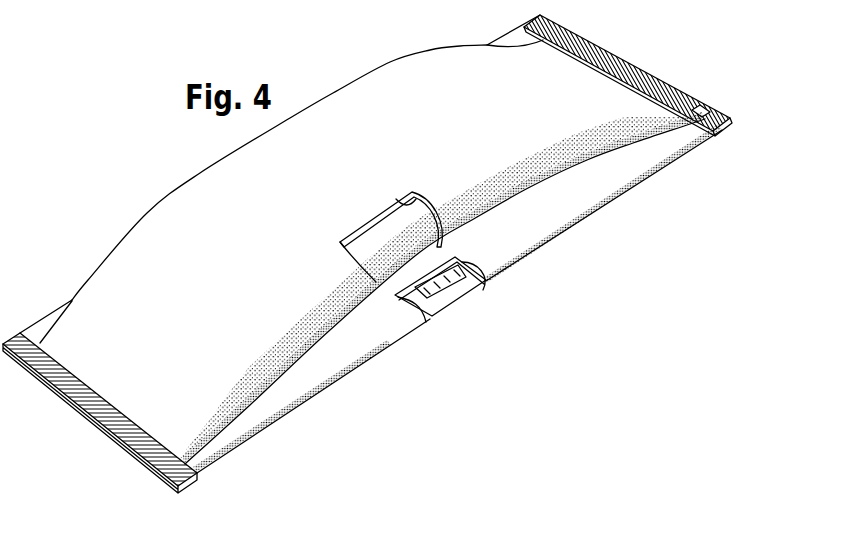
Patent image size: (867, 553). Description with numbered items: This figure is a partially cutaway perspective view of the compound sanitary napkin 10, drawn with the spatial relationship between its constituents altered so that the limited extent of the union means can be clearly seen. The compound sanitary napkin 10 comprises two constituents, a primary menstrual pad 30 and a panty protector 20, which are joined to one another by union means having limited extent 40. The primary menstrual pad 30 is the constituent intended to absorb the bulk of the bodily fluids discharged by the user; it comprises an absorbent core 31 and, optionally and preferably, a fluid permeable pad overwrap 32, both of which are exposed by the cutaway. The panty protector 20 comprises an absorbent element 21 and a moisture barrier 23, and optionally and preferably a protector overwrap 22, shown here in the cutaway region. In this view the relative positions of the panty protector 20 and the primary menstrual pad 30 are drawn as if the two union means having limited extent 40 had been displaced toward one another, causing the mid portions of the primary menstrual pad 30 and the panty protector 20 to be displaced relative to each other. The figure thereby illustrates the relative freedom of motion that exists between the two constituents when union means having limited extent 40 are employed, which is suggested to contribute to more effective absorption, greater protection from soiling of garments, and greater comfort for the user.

The compound sanitary napkin 10 is at (133, 172).
The panty protector 20 is at (633, 172).
The absorbent element 21 is at (452, 285).
The protector overwrap 22 is at (473, 290).
The moisture barrier 23 is at (438, 310).
The primary menstrual pad 30 is at (413, 68).
The absorbent core 31 is at (373, 242).
The pad overwrap 32 is at (418, 202).
The union means having limited extent 40 is at (618, 62).